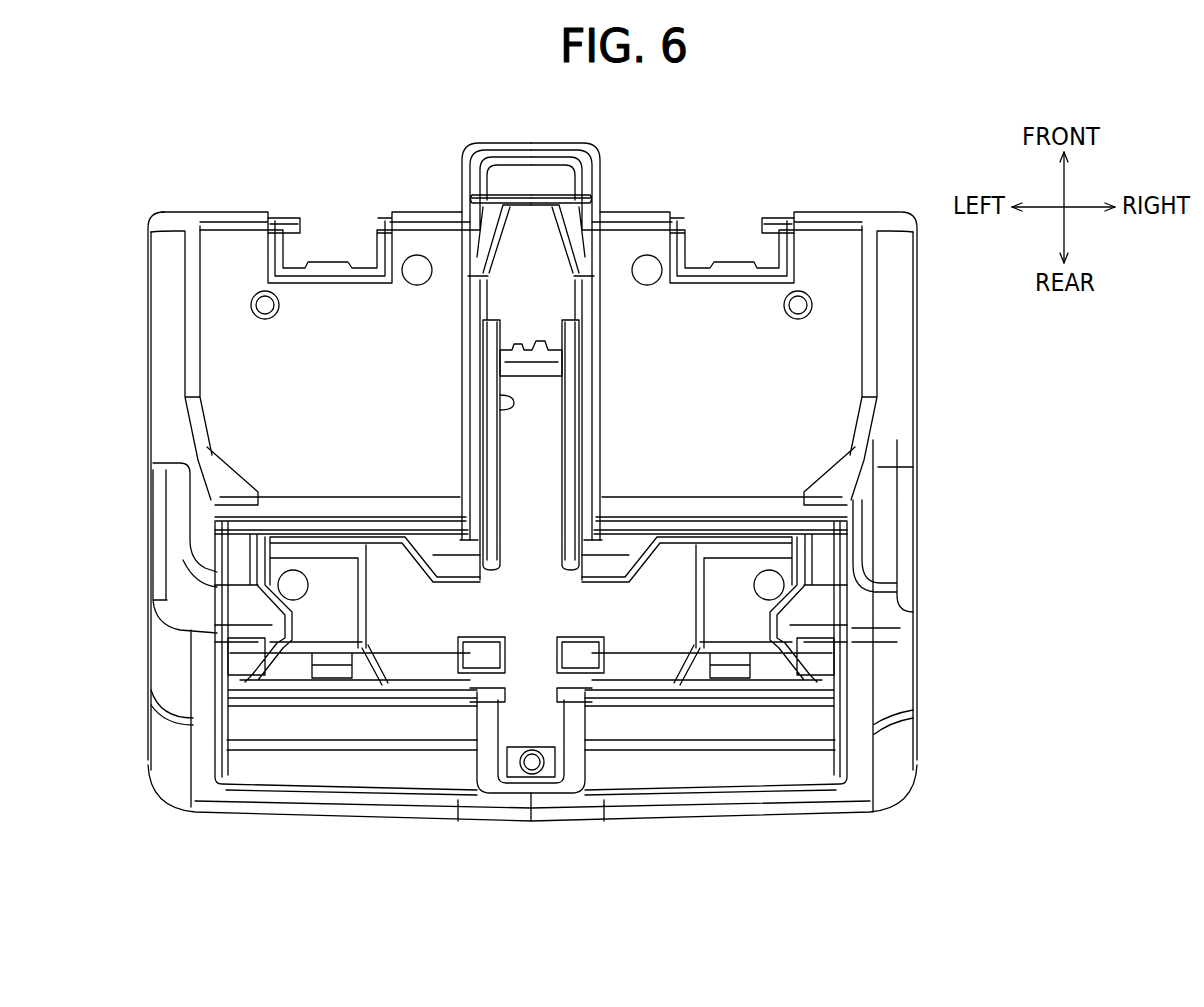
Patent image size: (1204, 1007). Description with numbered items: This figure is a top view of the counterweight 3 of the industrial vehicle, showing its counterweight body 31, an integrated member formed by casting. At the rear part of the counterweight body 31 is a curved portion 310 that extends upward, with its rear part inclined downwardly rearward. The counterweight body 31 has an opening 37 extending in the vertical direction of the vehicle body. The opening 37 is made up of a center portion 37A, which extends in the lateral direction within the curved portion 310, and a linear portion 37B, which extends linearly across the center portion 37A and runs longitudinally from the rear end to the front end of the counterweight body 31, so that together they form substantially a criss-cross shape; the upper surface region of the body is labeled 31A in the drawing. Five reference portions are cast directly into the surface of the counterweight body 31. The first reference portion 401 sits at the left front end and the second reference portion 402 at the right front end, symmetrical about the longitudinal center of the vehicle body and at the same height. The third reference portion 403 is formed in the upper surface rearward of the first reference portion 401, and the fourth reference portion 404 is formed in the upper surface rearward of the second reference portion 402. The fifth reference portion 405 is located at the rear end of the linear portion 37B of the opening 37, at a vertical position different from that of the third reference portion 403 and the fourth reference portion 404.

The counterweight 3 is at (890, 171).
The counterweight body 31 is at (920, 262).
The bottom plate 31A is at (682, 410).
The opening 37 is at (540, 492).
The center portion 37A is at (660, 630).
The linear portion 37B is at (510, 404).
The curved portion 310 is at (880, 593).
The first reference portion 401 is at (287, 220).
The second reference portion 402 is at (777, 220).
The third reference portion 403 is at (265, 316).
The fourth reference portion 404 is at (798, 318).
The fifth reference portion 405 is at (532, 749).